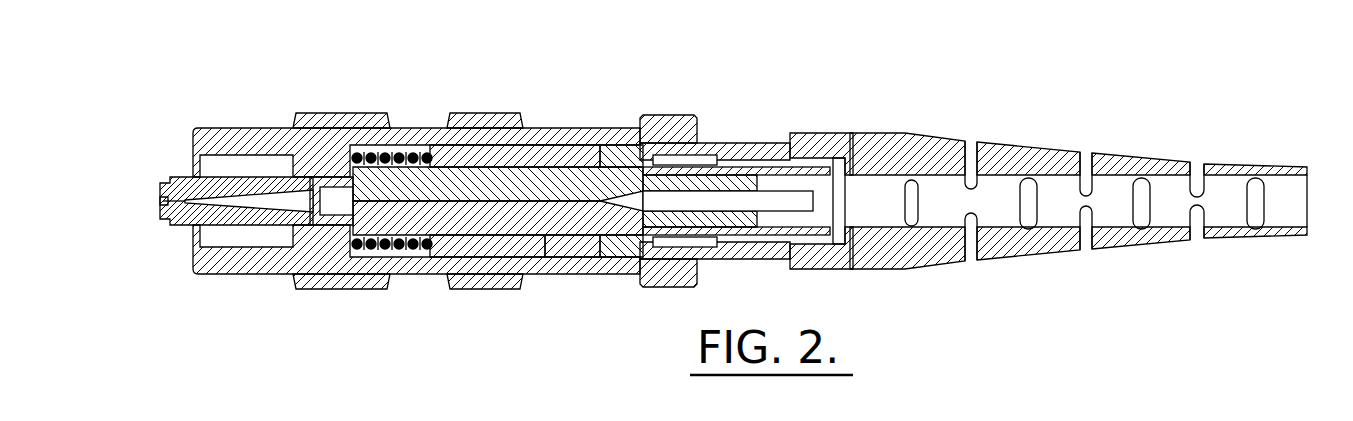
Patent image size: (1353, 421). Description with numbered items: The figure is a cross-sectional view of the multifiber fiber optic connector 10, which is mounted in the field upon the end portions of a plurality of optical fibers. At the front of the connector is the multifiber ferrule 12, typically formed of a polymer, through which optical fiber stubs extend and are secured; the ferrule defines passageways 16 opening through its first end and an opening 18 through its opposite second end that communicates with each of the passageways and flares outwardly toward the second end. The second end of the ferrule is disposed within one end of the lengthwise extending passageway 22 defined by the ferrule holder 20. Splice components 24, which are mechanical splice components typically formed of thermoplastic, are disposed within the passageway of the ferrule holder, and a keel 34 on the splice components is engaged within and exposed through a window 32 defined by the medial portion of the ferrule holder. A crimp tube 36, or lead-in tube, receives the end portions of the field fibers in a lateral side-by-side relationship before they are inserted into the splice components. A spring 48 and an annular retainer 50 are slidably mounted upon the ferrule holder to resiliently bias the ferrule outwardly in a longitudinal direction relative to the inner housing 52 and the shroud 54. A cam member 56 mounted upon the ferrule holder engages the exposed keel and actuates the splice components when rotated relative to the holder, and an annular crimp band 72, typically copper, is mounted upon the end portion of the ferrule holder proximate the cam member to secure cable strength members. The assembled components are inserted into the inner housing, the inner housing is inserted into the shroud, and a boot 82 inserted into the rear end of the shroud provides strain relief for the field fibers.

The multifiber fiber optic connector 10 is at (1003, 68).
The multifiber ferrule 12 is at (203, 177).
The passageways 16 is at (170, 203).
The opening 18 is at (338, 198).
The ferrule holder 20 is at (327, 247).
The lengthwise extending passageway 22 is at (663, 125).
The splice components 24 is at (513, 190).
The window 32 is at (567, 228).
The keel 34 is at (543, 228).
The crimp tube 36 is at (767, 193).
The spring 48 is at (390, 155).
The annular retainer 50 is at (463, 155).
The inner housing 52 is at (261, 128).
The shroud 54 is at (228, 274).
The cam member 56 is at (580, 155).
The annular crimp band 72 is at (730, 166).
The boot 82 is at (1020, 261).